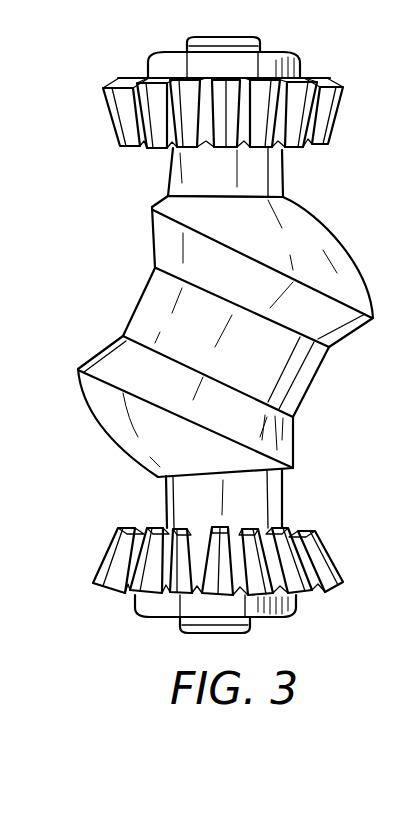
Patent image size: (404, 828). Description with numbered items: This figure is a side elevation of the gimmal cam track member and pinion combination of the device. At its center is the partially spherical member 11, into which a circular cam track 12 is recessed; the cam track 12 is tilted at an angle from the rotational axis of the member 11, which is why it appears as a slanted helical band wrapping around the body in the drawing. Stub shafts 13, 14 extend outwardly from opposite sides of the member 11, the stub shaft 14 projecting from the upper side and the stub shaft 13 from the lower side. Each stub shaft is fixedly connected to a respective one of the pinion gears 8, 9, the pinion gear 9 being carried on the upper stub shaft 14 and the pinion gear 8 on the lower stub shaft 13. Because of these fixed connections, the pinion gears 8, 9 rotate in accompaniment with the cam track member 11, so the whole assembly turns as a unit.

The pinion gear 8 is at (330, 568).
The pinion gear 9 is at (323, 95).
The partially spherical member 11 is at (208, 332).
The circular cam track 12 is at (283, 440).
The stub shaft 13 is at (263, 503).
The stub shaft 14 is at (283, 174).